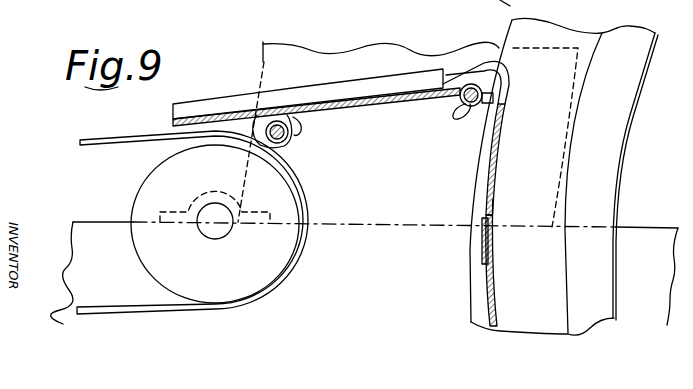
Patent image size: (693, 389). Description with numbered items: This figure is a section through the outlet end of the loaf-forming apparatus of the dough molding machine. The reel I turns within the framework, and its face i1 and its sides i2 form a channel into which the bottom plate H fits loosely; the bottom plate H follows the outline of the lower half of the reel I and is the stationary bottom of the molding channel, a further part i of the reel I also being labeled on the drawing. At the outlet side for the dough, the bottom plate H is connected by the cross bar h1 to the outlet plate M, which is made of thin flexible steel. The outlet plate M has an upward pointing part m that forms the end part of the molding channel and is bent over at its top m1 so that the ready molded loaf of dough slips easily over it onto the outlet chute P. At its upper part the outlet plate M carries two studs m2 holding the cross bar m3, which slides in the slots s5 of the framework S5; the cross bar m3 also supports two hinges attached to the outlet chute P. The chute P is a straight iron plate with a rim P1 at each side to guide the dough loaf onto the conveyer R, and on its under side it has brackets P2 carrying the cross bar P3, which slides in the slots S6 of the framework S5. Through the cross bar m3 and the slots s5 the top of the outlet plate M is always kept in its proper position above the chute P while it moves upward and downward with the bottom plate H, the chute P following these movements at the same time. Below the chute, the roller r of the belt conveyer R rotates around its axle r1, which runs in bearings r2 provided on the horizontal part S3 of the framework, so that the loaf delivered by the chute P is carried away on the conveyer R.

The belt conveyer R is at (81, 141).
The roller r is at (147, 190).
The axle r1 is at (221, 231).
The bearings r2 is at (208, 193).
The outlet chute P is at (203, 103).
The rim P1 is at (352, 86).
The brackets P2 is at (291, 136).
The cross bar P3 is at (293, 144).
The bent-over top m1 is at (509, 73).
The studs m2 is at (497, 122).
The cross bar m3 is at (458, 113).
The outlet plate M is at (496, 168).
The upward pointing part m is at (493, 212).
The bottom plate H is at (494, 283).
The cross bar h1 is at (483, 253).
The outer wall i is at (619, 175).
The face i1 is at (565, 299).
The sides i2 is at (474, 163).
The reel I is at (635, 109).
The framework S5 is at (262, 63).
The slots S6 is at (279, 113).
The slots s5 is at (511, 8).
The horizontal part of the framework S3 is at (326, 316).